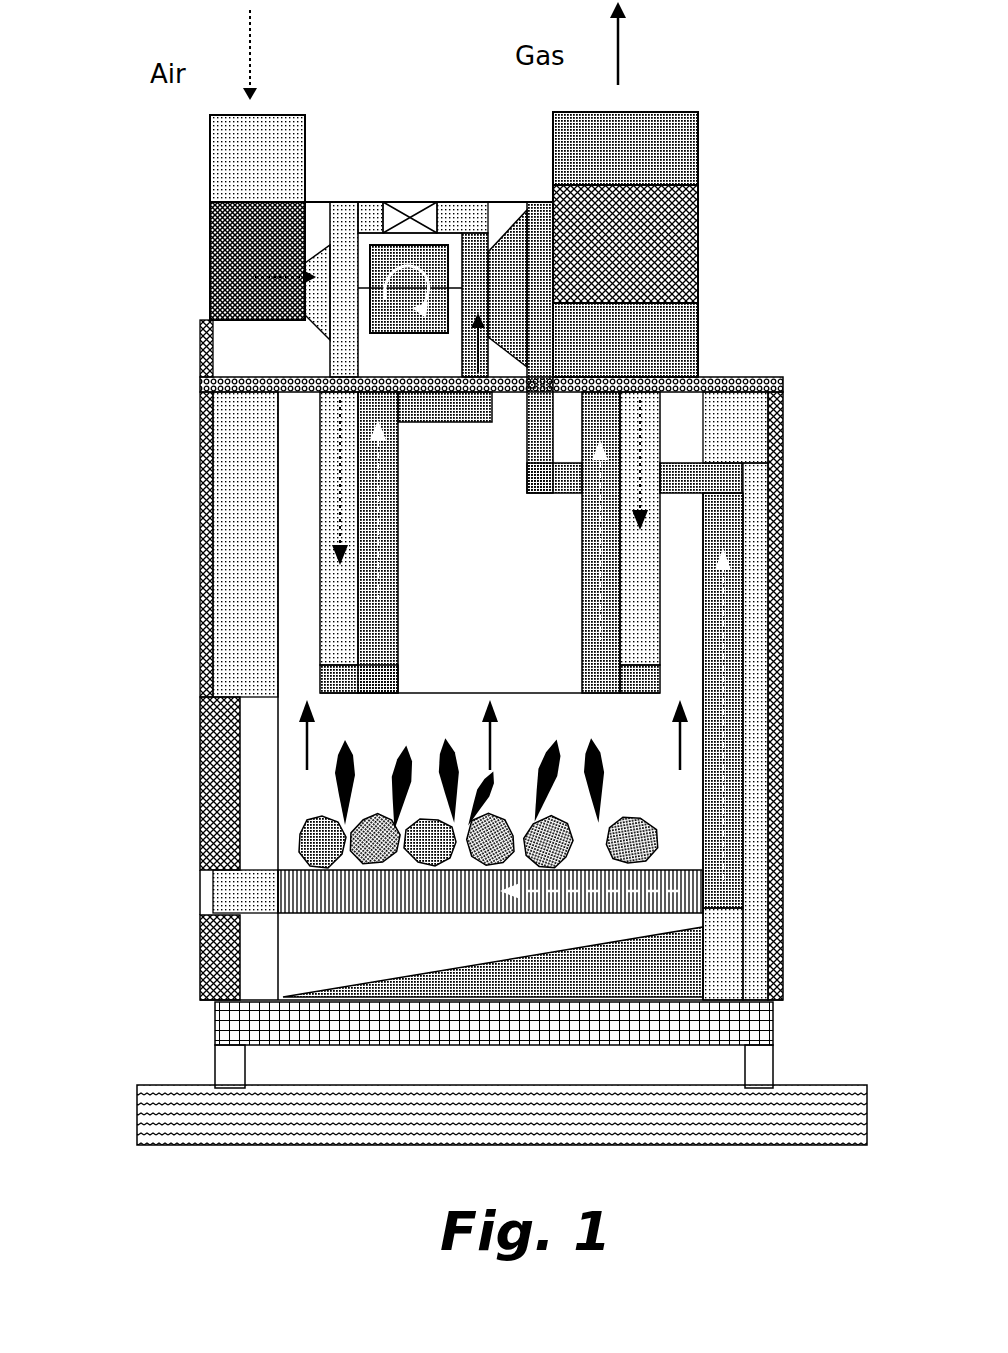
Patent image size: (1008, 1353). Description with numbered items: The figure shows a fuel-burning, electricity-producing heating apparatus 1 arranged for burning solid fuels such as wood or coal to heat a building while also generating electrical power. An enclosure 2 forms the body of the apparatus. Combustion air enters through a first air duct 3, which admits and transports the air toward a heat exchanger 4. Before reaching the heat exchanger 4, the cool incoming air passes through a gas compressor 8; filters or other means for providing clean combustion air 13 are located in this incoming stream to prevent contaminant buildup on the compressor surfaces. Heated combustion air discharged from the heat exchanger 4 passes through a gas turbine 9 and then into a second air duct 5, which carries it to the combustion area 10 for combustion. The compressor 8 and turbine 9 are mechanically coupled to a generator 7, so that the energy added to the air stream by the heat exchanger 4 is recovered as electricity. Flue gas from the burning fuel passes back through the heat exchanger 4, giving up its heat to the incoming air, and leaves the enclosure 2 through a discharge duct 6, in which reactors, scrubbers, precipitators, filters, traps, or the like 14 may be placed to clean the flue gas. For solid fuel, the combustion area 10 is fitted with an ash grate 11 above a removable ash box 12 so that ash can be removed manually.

The fuel-burning, electricity-producing heating apparatus 1 is at (180, 1040).
The enclosure 2 is at (200, 673).
The first air duct 3 is at (255, 165).
The heat exchanger 4 is at (333, 594).
The second air duct 5 is at (737, 590).
The discharge duct 6 is at (675, 152).
The generator 7 is at (438, 260).
The gas compressor 8 is at (320, 300).
The gas turbine 9 is at (517, 333).
The combustion area 10 is at (627, 763).
The ash grate 11 is at (360, 887).
The removable ash box 12 is at (703, 943).
The filters or other means for providing clean combustion air 13 is at (258, 252).
The reactors, scrubbers, precipitators, filters, traps, or the like 14 is at (643, 243).